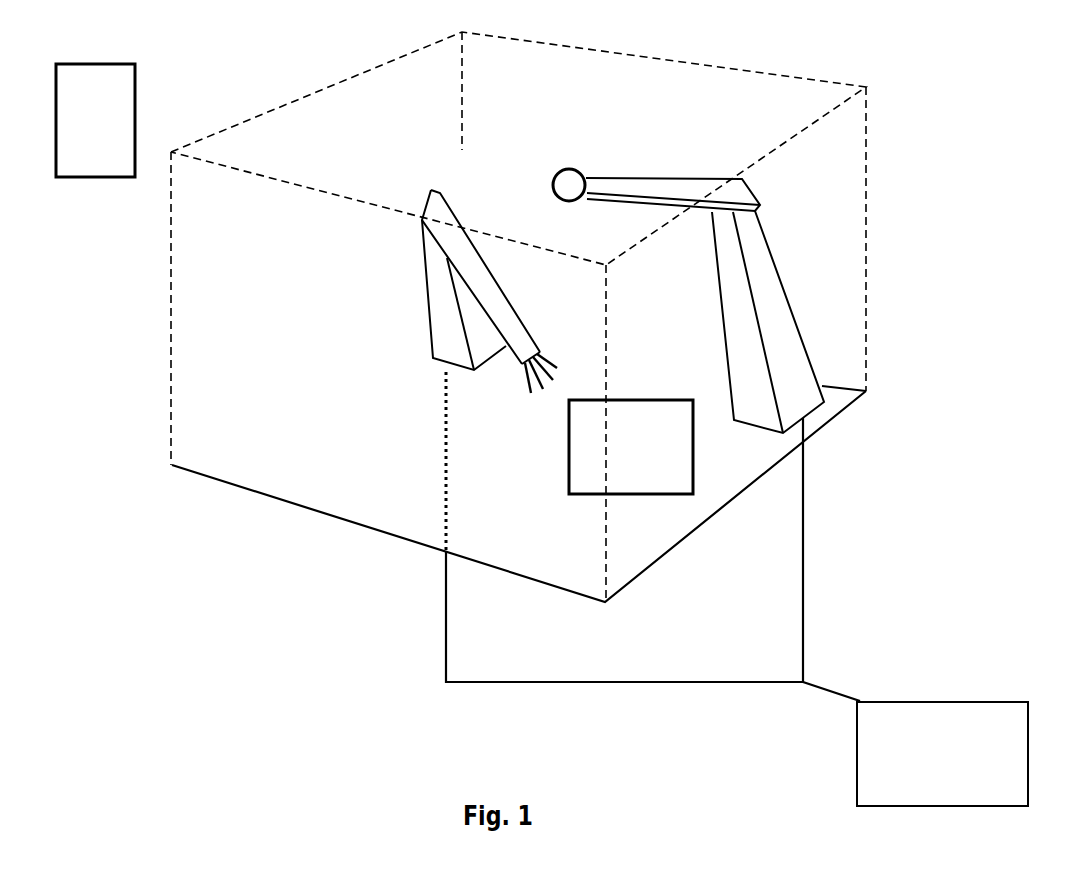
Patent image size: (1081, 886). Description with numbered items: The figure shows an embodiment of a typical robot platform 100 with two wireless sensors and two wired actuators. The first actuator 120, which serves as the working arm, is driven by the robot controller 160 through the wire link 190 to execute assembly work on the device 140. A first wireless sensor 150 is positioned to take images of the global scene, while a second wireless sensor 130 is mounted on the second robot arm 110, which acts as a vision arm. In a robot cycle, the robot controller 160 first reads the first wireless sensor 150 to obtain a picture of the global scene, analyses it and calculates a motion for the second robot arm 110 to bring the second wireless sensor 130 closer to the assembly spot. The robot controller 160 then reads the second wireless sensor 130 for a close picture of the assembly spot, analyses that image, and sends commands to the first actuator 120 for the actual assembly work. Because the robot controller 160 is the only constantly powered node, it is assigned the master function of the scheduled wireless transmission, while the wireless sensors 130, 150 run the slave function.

The robot workspace / work cell 100 is at (330, 520).
The second robot arm 110 is at (753, 232).
The first actuator 120 is at (435, 263).
The second wireless sensor 130 is at (553, 173).
The device 140 is at (693, 485).
The first wireless sensor 150 is at (135, 70).
The robot controller 160 is at (868, 737).
The wire link 190 is at (733, 683).